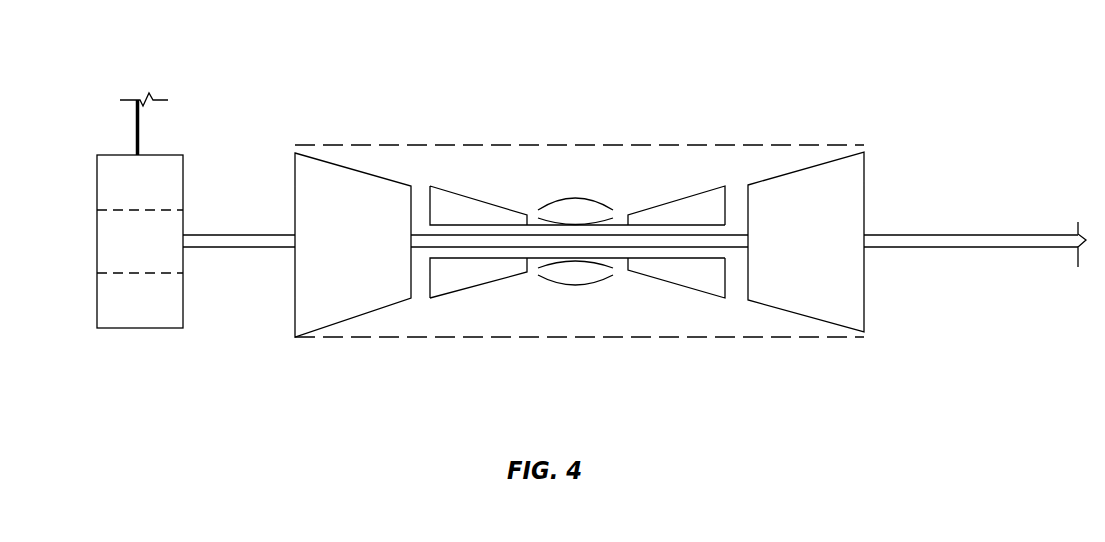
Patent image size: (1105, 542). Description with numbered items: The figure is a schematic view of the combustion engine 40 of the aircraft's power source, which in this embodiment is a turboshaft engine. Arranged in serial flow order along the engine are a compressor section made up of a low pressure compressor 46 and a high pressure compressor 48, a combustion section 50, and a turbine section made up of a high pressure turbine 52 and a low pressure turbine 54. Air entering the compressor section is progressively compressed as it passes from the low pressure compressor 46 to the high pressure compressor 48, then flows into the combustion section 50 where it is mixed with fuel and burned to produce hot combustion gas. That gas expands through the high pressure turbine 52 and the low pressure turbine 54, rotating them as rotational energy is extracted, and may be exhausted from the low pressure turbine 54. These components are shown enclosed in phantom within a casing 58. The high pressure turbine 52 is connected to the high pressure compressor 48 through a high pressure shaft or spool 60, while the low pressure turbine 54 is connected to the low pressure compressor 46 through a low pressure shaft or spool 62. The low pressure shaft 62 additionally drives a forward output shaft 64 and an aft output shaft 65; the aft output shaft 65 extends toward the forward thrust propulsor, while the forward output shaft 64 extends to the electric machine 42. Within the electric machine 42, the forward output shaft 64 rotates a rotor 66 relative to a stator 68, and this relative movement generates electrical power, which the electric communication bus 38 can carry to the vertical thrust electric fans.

The electric communication bus 38 is at (111, 116).
The combustion engine 40 is at (540, 58).
The electric machine 42 is at (203, 190).
The low pressure compressor 46 is at (328, 193).
The high pressure compressor 48 is at (443, 212).
The combustion section 50 is at (612, 278).
The high pressure turbine 52 is at (645, 218).
The low pressure turbine 54 is at (803, 222).
The casing 58 is at (595, 141).
The high pressure shaft or spool 60 is at (532, 235).
The low pressure shaft or spool 62 is at (417, 250).
The forward output shaft 64 is at (226, 242).
The aft output shaft 65 is at (925, 250).
The rotor 66 is at (106, 250).
The stator 68 is at (106, 193).